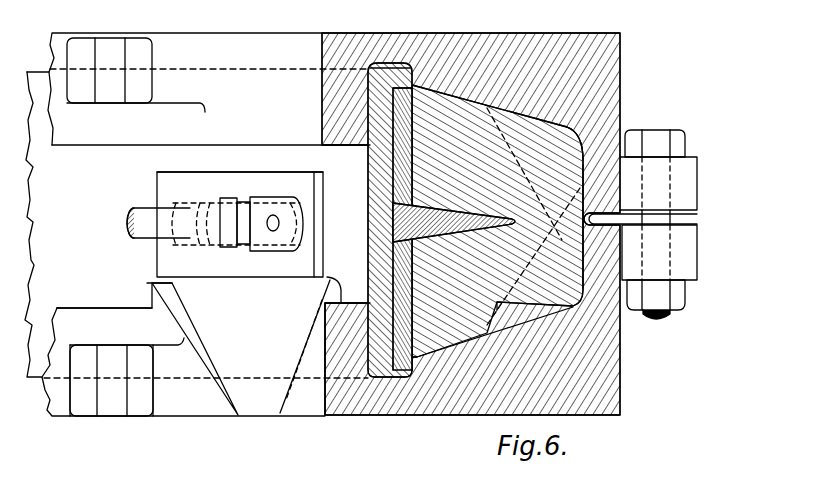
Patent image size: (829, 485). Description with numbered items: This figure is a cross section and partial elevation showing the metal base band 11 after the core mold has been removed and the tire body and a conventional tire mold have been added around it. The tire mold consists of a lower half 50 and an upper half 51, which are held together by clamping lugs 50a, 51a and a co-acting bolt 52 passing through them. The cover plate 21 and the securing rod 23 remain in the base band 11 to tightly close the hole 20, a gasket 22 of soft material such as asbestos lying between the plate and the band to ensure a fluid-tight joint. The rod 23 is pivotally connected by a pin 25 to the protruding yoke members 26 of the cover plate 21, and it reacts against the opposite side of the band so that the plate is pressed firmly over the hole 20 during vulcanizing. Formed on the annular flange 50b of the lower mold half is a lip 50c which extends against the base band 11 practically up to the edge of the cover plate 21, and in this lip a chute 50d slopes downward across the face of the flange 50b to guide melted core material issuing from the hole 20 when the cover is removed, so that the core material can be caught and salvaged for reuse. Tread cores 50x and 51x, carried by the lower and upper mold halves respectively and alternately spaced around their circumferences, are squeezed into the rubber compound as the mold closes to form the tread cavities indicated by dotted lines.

The metal base band 11 is at (390, 363).
The hole 20 is at (316, 174).
The cover plate 21 is at (279, 252).
The gasket 22 is at (324, 175).
The rod 23 is at (145, 215).
The pin 25 is at (268, 215).
The yoke members 26 is at (255, 193).
The lower half of tire mold 50 is at (463, 407).
The clamping lug 50a is at (730, 298).
The annular flange 50b is at (345, 347).
The lip 50c is at (147, 283).
The chute 50d is at (230, 303).
The tread core 50x is at (573, 307).
The upper half of tire mold 51 is at (613, 75).
The clamping lug 51a is at (160, 42).
The tread core 51x is at (503, 157).
The bolt 52 is at (677, 140).